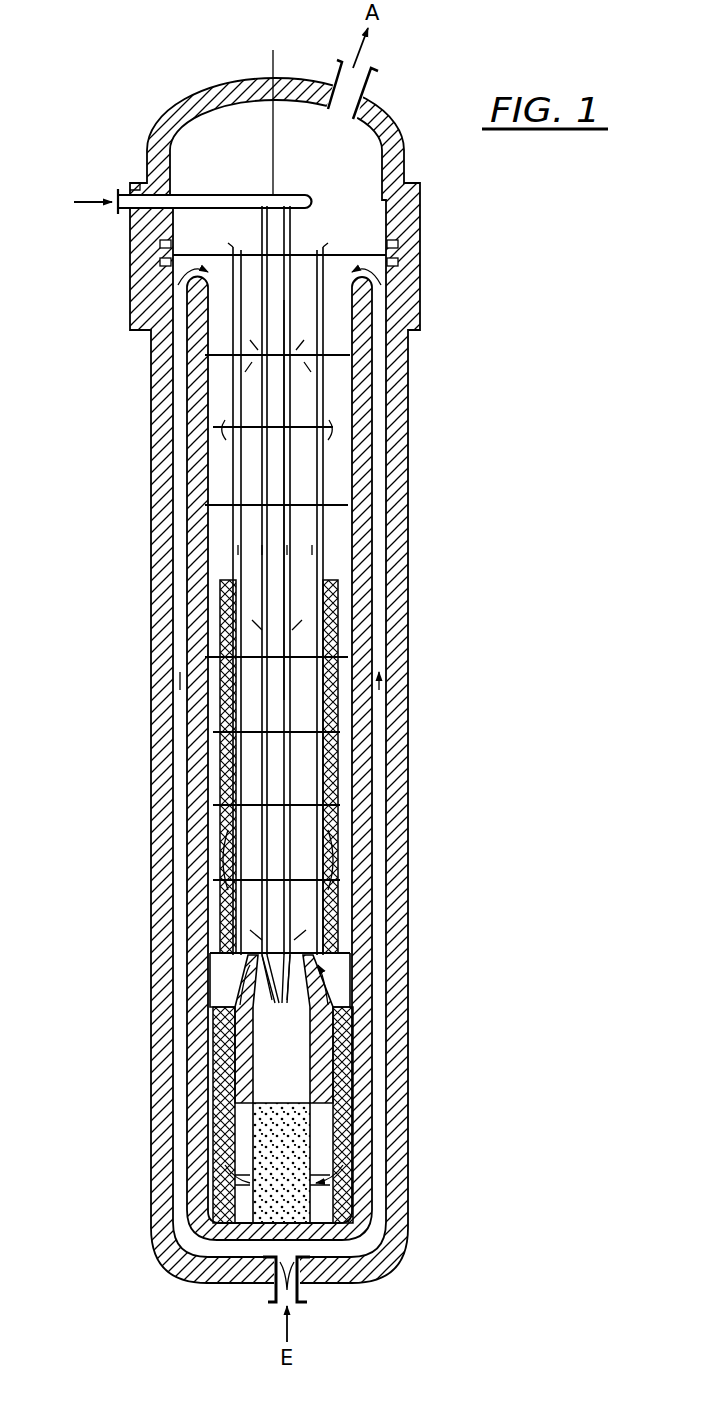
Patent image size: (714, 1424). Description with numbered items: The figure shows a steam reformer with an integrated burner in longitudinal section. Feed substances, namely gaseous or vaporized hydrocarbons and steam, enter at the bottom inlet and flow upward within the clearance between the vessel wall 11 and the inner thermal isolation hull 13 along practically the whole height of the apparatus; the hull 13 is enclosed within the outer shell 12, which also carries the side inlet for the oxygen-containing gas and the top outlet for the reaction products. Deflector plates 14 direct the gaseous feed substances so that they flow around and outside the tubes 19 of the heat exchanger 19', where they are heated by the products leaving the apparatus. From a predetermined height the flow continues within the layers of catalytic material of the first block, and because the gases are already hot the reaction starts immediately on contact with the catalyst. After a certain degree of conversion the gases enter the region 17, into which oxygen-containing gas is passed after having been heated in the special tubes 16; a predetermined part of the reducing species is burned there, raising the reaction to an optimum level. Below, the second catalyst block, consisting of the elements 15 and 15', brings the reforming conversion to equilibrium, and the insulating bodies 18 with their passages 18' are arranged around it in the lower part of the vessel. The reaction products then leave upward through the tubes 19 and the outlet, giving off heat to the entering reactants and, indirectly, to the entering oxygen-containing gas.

The vessel wall 11 is at (172, 720).
The outer pressure vessel 12 is at (151, 578).
The inner thermal isolation hull 13 is at (363, 975).
The deflector plates 14 is at (198, 250).
The second catalyst-block element 15 is at (357, 1163).
The second catalyst-block element 15' is at (406, 1064).
The special tubes 16 is at (268, 768).
The region 17 is at (282, 1024).
The insulating ring 18 is at (220, 1115).
The gas passages 18' is at (218, 1181).
The tubes 19 is at (343, 578).
The heat exchanger 19' is at (372, 500).